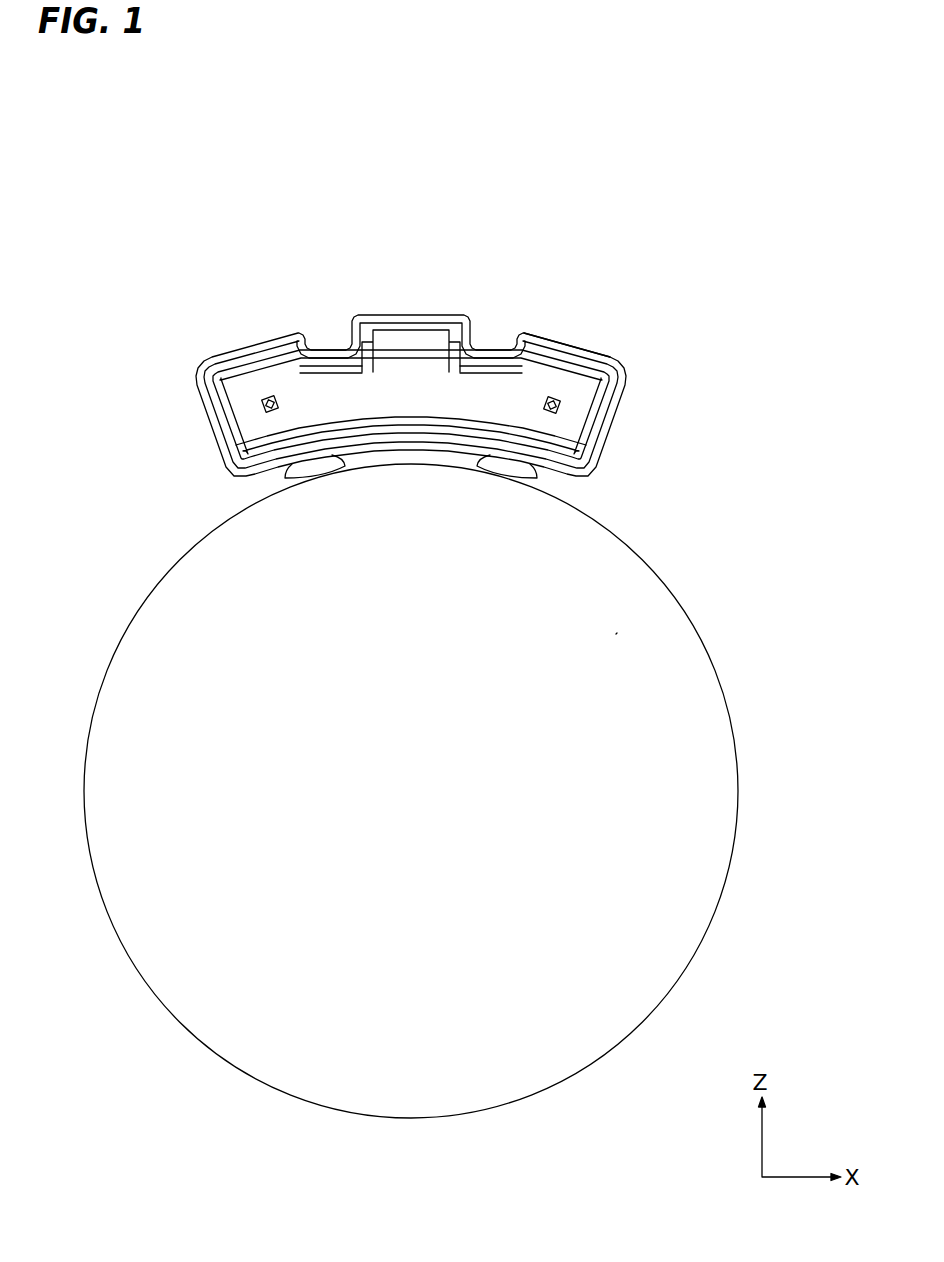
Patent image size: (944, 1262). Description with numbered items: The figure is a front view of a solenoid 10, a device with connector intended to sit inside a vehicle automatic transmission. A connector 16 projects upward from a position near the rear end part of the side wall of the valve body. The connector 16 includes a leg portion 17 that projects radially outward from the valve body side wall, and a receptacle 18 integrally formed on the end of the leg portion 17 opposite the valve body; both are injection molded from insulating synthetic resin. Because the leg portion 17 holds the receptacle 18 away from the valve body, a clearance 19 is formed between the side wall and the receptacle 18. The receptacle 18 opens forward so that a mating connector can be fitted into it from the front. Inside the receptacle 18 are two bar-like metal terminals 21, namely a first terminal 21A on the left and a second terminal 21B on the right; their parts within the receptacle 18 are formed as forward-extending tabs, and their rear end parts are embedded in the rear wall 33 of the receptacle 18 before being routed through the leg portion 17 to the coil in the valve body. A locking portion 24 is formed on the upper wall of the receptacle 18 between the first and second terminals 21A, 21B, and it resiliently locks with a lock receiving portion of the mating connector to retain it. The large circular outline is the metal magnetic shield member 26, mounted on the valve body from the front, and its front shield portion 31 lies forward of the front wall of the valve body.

The solenoid 10 is at (720, 406).
The connector 16 is at (543, 224).
The leg portion 17 is at (352, 462).
The receptacle 18 is at (546, 334).
The clearance 19 is at (536, 470).
The terminals 21 is at (410, 268).
The first terminal 21A is at (547, 409).
The second terminal 21B is at (278, 400).
The locking portion 24 is at (431, 342).
The magnetic shield member 26 is at (710, 691).
The front shield portion 31 is at (617, 633).
The rear wall 33 is at (573, 390).